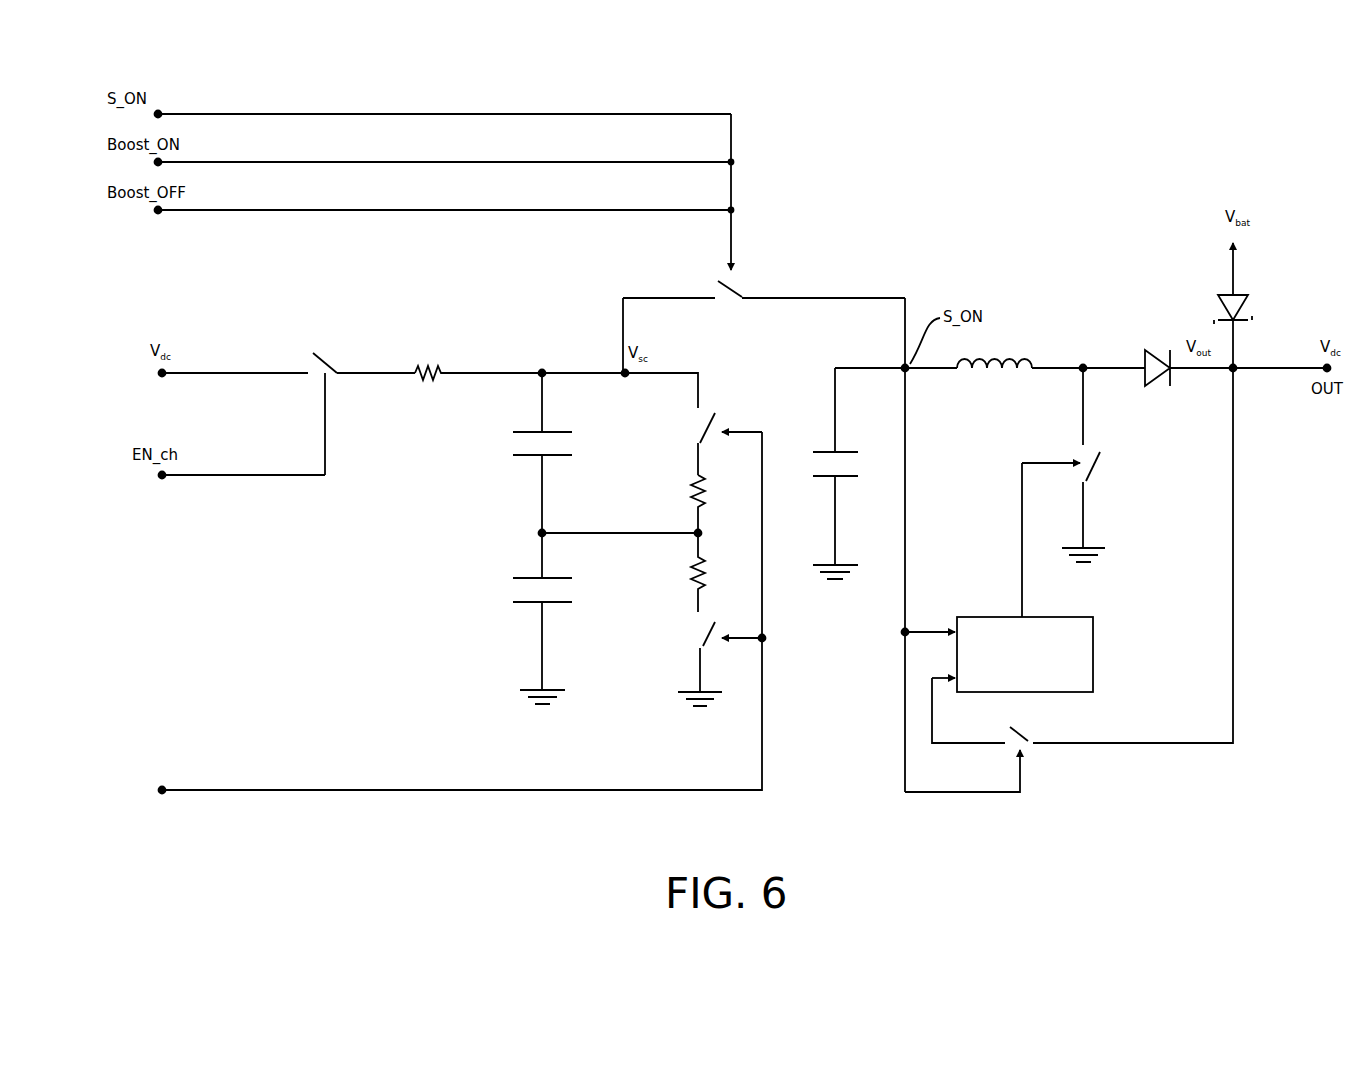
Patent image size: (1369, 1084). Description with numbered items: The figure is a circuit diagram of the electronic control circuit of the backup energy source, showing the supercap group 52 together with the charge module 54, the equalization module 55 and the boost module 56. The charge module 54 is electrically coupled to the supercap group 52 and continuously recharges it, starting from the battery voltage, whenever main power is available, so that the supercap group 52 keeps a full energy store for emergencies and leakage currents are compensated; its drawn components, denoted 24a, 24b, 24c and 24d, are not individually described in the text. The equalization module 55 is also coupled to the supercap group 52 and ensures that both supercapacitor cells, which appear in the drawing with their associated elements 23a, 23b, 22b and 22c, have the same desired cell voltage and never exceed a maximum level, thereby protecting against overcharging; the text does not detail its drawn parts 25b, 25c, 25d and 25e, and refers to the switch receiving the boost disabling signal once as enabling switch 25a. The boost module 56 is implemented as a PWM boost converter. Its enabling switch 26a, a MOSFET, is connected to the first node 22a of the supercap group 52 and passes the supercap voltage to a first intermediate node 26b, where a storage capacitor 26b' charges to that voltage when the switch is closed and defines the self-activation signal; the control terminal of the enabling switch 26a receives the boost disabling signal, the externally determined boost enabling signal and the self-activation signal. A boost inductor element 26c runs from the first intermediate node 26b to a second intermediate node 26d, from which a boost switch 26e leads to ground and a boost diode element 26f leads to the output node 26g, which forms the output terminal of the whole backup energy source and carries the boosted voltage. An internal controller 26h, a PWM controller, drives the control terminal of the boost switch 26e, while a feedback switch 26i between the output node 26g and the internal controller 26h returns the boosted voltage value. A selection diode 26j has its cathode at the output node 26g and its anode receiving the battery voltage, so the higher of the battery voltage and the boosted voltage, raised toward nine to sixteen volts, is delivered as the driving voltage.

The first node 22a is at (542, 370).
The ground node of charge storage 22b is at (547, 688).
The intermediate node between capacitors 22c is at (546, 536).
The first capacitor 23a is at (515, 455).
The second capacitor 23b is at (515, 600).
The DC voltage input terminal 24a is at (162, 376).
The charge enable input terminal 24b is at (162, 478).
The charging switch 24c is at (330, 355).
The charging resistor 24d is at (427, 380).
The enabling switch 25a is at (695, 480).
The second equalization resistor 25b is at (695, 572).
The first equalization switch 25c is at (700, 431).
The second equalization switch 25d is at (700, 635).
The equalization enable terminal 25e is at (162, 793).
The enabling switch 26a is at (728, 300).
The first intermediate node 26b is at (899, 559).
The storage capacitor 26b' is at (841, 473).
The boost inductor element 26c is at (985, 378).
The second intermediate node 26d is at (1083, 365).
The boost switch 26e is at (1094, 465).
The boost diode element 26f is at (1158, 358).
The output node 26g is at (1237, 372).
The internal controller 26h is at (1095, 627).
The feedback switch 26i is at (1022, 727).
The selection diode 26j is at (1243, 312).
The supercap group 52 is at (488, 522).
The charge module 54 is at (350, 485).
The equalization module 55 is at (740, 403).
The boost module 56 is at (1025, 295).